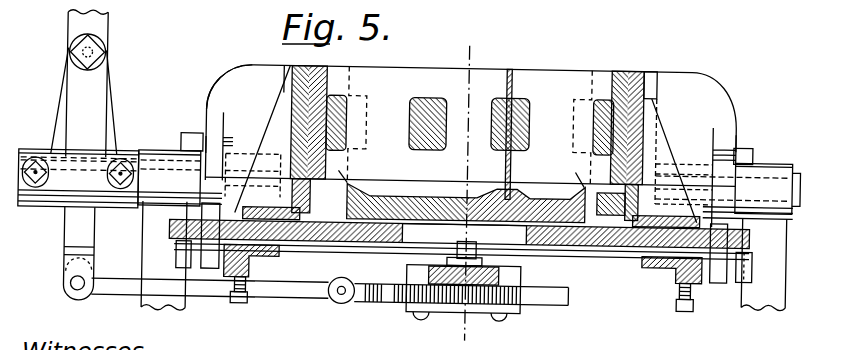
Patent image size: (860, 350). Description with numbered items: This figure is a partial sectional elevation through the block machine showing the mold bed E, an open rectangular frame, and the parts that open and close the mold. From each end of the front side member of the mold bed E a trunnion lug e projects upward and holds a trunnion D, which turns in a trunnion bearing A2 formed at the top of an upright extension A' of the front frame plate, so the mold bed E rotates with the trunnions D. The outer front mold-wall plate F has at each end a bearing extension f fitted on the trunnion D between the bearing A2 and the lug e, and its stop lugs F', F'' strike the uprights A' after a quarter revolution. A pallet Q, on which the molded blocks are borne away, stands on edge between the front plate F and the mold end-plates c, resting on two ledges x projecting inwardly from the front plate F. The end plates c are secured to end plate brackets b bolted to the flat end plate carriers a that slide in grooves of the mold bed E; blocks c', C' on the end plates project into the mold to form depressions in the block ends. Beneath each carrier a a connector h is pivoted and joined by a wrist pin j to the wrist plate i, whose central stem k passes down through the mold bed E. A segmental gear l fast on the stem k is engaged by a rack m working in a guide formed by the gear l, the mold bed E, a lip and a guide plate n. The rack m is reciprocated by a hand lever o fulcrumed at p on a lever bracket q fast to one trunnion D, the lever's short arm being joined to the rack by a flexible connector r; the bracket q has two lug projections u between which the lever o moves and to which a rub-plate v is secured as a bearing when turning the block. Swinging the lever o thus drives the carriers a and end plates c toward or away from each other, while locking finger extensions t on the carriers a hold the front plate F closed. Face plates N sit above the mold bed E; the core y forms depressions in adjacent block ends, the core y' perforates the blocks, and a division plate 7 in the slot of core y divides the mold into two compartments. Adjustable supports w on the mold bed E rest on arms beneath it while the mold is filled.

The hand lever o is at (95, 29).
The fulcrum pivot p is at (103, 56).
The lever bracket q is at (110, 134).
The trunnion bearing A2 is at (155, 155).
The stop lug F'' is at (466, 133).
The stop lug F' is at (222, 85).
The pallet Q is at (282, 72).
The end plate bracket b is at (296, 103).
The mold end-plate c is at (473, 132).
The block c' is at (344, 123).
The block C' is at (580, 127).
The ledge x is at (454, 171).
The face plate N is at (466, 188).
The core y' is at (428, 111).
The core y is at (494, 178).
The division plate 7 is at (508, 68).
The wrist pin j is at (464, 241).
The outer front mold-wall plate F is at (471, 145).
The trunnion lug e is at (685, 184).
The trunnion D is at (24, 206).
The rub-plate v is at (77, 247).
The bearing extension f is at (220, 183).
The upright extension A' is at (464, 261).
The connector r is at (123, 286).
The locking finger extension t is at (177, 260).
The end plate carrier a is at (318, 243).
The connector h is at (355, 254).
The wrist plate i is at (445, 256).
The mold bed E is at (498, 272).
The rack m is at (395, 303).
The wrist-plate stem k is at (458, 306).
The lug projection u is at (460, 317).
The segmental gear l is at (488, 308).
The guide plate n is at (515, 312).
The support w is at (693, 306).